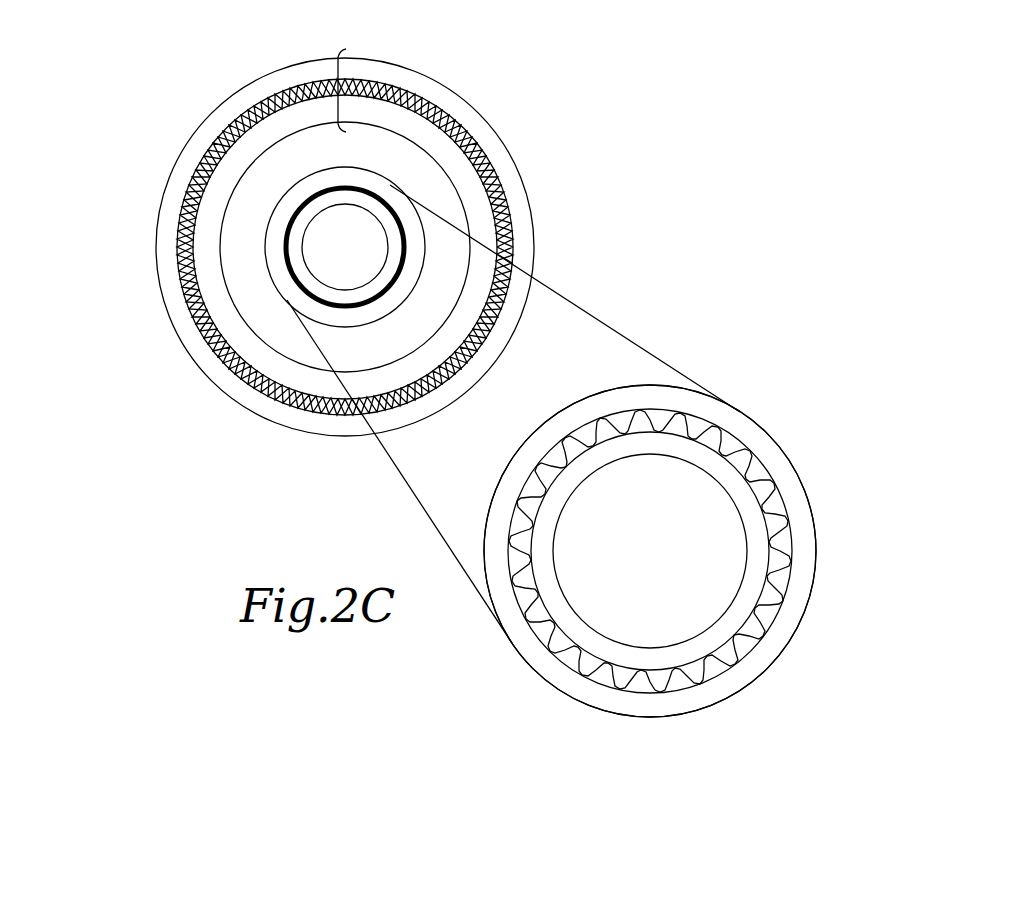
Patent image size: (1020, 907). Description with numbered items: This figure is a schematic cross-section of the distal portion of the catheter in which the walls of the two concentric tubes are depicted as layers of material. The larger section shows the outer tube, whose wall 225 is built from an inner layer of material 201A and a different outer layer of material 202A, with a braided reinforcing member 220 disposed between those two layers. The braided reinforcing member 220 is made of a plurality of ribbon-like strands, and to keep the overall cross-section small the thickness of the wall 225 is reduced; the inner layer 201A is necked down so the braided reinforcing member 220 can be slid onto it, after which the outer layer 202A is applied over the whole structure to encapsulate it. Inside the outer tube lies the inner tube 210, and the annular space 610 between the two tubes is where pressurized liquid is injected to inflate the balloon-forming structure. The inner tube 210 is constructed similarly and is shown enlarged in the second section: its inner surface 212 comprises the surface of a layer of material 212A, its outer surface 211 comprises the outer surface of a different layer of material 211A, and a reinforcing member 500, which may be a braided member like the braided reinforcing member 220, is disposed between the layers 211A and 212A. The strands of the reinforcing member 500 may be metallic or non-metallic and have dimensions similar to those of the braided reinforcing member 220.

The inner tubular sheath 210 is at (415, 227).
The outer surface of inner tube 211 is at (733, 700).
The outer layer of inner tube 211A is at (778, 645).
The inner surface of inner tube 212 is at (752, 548).
The inner layer of inner tube 212A is at (743, 495).
The reinforcing member 500 is at (367, 188).
The braided reinforcing member 220 is at (187, 225).
The inner layer of outer tube 201A is at (257, 137).
The outer layer of outer tube 202A is at (193, 337).
The wall of outer tube 225 is at (336, 88).
The annular space 610 is at (300, 350).